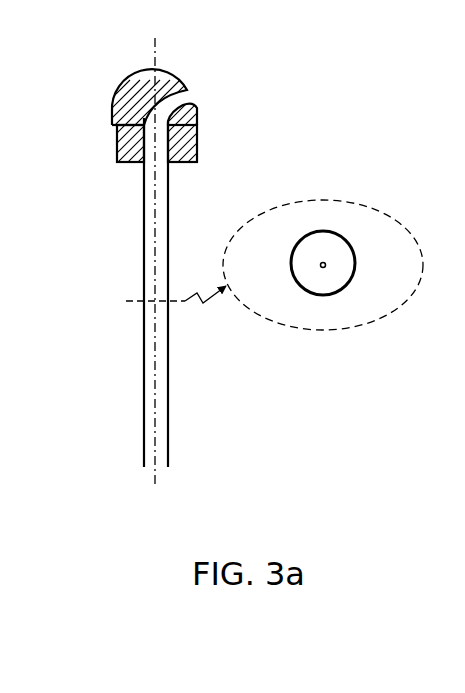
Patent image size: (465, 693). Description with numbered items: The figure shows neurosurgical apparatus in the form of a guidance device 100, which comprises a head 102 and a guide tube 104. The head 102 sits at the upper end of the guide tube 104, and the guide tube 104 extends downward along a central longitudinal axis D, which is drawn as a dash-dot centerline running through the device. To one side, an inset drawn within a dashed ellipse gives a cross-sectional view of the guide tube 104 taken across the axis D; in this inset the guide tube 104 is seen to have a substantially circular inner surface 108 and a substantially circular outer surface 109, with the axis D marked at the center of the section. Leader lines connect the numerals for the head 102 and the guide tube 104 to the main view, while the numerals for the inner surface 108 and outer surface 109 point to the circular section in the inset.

The guidance device 100 is at (92, 369).
The head 102 is at (163, 82).
The guide tube 104 is at (168, 230).
The inner surface 108 is at (350, 245).
The outer surface 109 is at (312, 232).